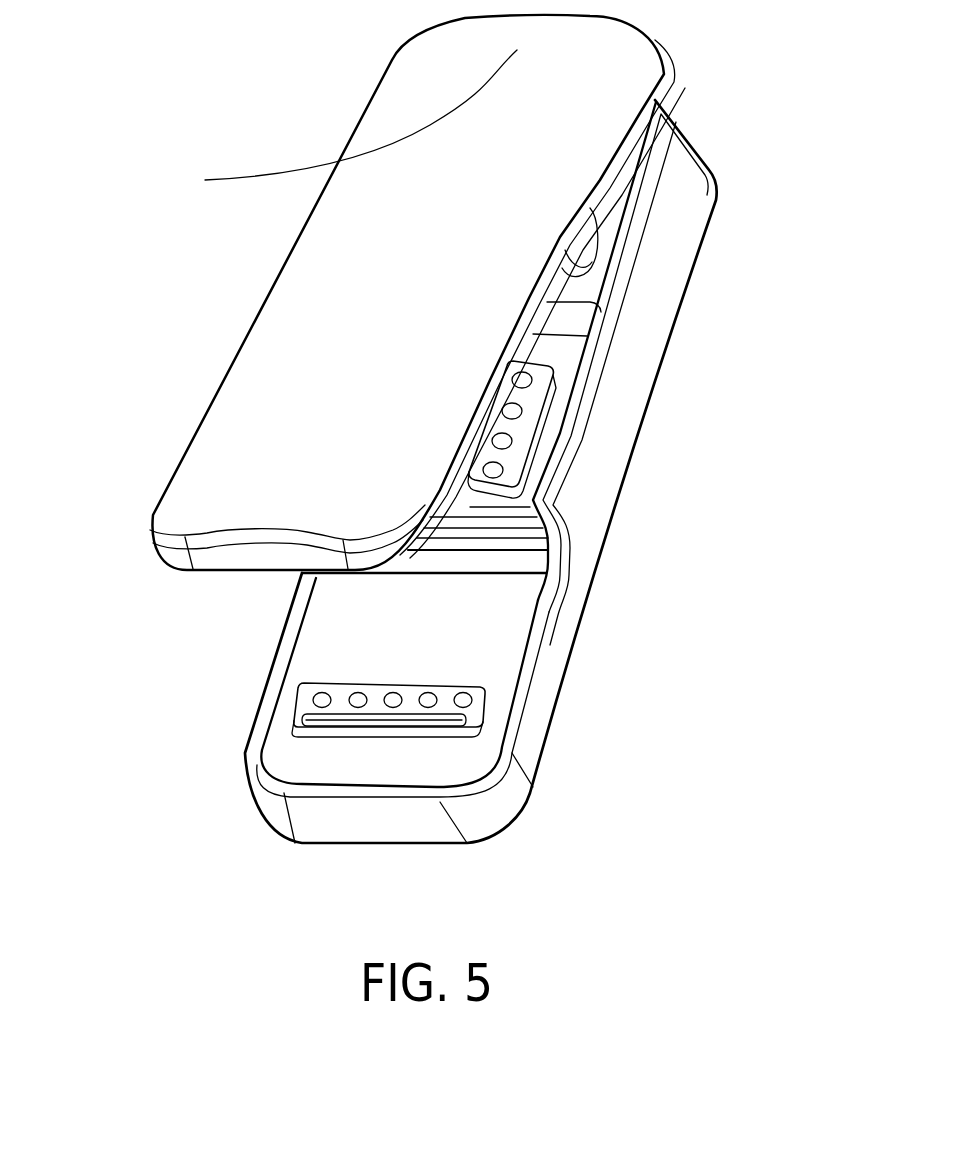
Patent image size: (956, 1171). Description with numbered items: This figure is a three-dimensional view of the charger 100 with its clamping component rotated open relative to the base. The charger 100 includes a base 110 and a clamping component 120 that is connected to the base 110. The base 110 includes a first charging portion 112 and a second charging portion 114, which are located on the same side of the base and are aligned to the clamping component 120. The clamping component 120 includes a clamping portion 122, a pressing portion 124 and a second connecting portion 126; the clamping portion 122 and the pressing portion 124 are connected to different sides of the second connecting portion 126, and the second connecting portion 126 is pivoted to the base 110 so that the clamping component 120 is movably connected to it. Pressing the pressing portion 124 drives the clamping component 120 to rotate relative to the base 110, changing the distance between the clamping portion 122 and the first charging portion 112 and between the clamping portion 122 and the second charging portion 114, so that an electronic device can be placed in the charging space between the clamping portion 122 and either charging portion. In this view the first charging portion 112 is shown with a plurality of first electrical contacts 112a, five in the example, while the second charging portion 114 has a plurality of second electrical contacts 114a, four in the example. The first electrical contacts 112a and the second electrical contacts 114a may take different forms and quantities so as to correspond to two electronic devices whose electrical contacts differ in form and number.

The charger 100 is at (436, 458).
The base 110 is at (480, 471).
The first charging portion 112 is at (547, 690).
The first electrical contacts 112a is at (316, 687).
The second charging portion 114 is at (600, 450).
The second electrical contacts 114a is at (497, 478).
The clamping component 120 is at (388, 292).
The clamping portion 122 is at (283, 410).
The pressing portion 124 is at (334, 124).
The second connecting portion 126 is at (587, 247).